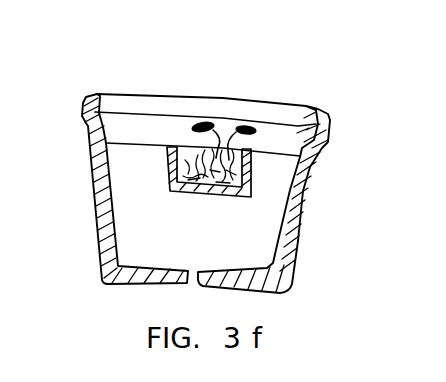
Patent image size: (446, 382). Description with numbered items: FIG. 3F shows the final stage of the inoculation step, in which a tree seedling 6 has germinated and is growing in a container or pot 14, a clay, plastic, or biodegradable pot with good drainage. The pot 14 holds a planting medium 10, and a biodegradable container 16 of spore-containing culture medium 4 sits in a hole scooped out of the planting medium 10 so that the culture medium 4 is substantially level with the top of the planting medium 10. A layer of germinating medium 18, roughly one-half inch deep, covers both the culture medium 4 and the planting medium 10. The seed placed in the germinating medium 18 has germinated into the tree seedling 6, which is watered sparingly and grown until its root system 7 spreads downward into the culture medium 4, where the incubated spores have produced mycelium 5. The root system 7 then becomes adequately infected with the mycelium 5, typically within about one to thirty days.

The planting medium 10 is at (256, 251).
The container or pot 14 is at (300, 198).
The germinating medium 18 is at (333, 118).
The biodegradable container 16 is at (253, 172).
The mycelium 5 is at (200, 166).
The root system 7 is at (193, 165).
The tree seedling 6 is at (250, 123).
The culture medium 4 is at (198, 178).